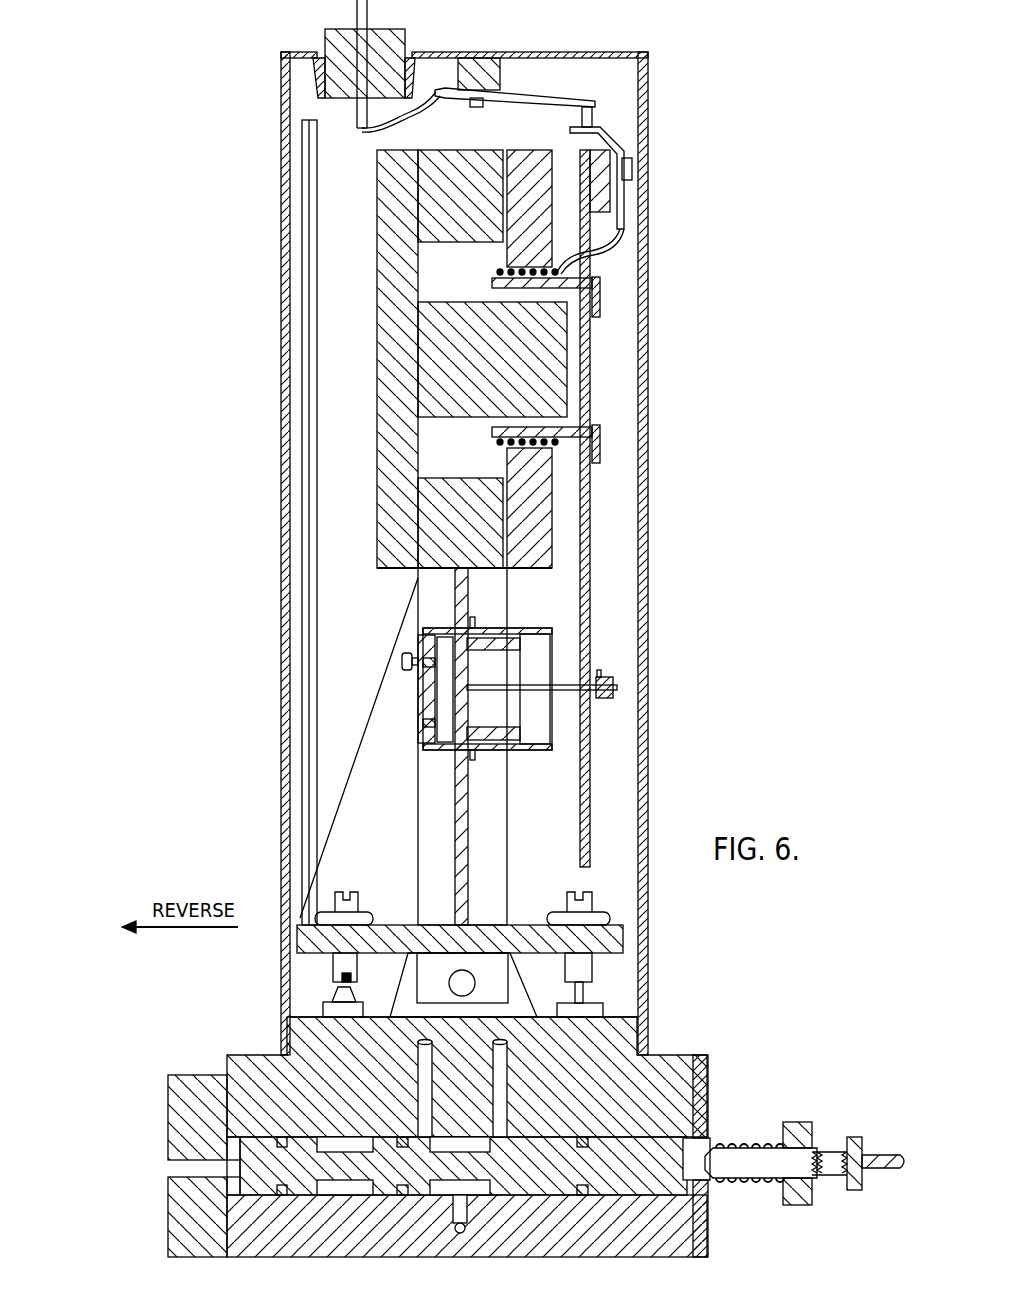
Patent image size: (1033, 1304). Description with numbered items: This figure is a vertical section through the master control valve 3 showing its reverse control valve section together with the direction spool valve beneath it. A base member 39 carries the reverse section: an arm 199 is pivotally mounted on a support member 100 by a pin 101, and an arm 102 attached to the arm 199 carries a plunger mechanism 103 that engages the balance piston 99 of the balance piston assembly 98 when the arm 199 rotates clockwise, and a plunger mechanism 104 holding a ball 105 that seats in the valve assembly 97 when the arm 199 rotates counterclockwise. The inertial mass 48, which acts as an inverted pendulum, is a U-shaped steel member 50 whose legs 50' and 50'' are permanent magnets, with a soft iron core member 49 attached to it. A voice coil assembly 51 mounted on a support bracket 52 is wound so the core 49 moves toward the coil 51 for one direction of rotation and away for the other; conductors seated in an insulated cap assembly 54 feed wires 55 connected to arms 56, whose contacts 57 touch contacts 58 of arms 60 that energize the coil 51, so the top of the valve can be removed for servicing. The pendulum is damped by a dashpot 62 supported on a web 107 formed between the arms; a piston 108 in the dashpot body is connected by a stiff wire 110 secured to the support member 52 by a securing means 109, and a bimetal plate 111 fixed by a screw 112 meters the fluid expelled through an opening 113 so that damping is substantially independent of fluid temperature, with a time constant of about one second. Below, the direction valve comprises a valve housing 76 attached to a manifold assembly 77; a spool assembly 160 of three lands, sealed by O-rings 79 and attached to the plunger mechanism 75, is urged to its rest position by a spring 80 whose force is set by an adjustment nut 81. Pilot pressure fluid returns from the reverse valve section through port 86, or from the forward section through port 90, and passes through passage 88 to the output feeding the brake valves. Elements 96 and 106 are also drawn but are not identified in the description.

The master control valve 3 is at (272, 467).
The base member 39 is at (617, 1043).
The inertial mass 48 is at (364, 307).
The soft iron core member 49 is at (465, 317).
The U-shaped steel member 50 is at (447, 359).
The leg of U-shaped member 50' is at (460, 181).
The leg of U-shaped member 50'' is at (460, 507).
The voice coil assembly 51 is at (498, 272).
The support bracket 52 is at (393, 678).
The insulated cap assembly 54 is at (406, 44).
The wires 55 is at (415, 112).
The arm 56 is at (553, 105).
The contacts 57 is at (594, 112).
The contacts 58 is at (600, 128).
The arms 60 is at (556, 266).
The dashpot 62 is at (530, 750).
The plunger mechanism 75 is at (855, 1150).
The valve housing 76 is at (647, 1256).
The manifold assembly 77 is at (200, 1086).
The O-rings 79 is at (290, 1197).
The spring 80 is at (742, 1135).
The adjustment nut 81 is at (795, 1122).
The port 86 is at (508, 1058).
The passage 88 is at (464, 1211).
The port 90 is at (418, 1052).
The guide strip 96 is at (318, 445).
The valve assembly 97 is at (321, 1002).
The balance piston assembly 98 is at (627, 993).
The balance piston 99 is at (577, 996).
The support member 100 is at (405, 977).
The pin 101 is at (474, 985).
The arm 102 is at (395, 928).
The plunger mechanism 103 is at (565, 967).
The plunger mechanism 104 is at (340, 968).
The ball 105 is at (352, 977).
The stop lever 106 is at (348, 978).
The web 107 is at (466, 858).
The piston 108 is at (513, 640).
The securing means 109 is at (603, 677).
The stiff wire 110 is at (568, 692).
The bimetal plate 111 is at (418, 699).
The screw 112 is at (402, 660).
The opening 113 is at (420, 727).
The spool assembly 160 is at (704, 1192).
The arm 199 is at (416, 858).